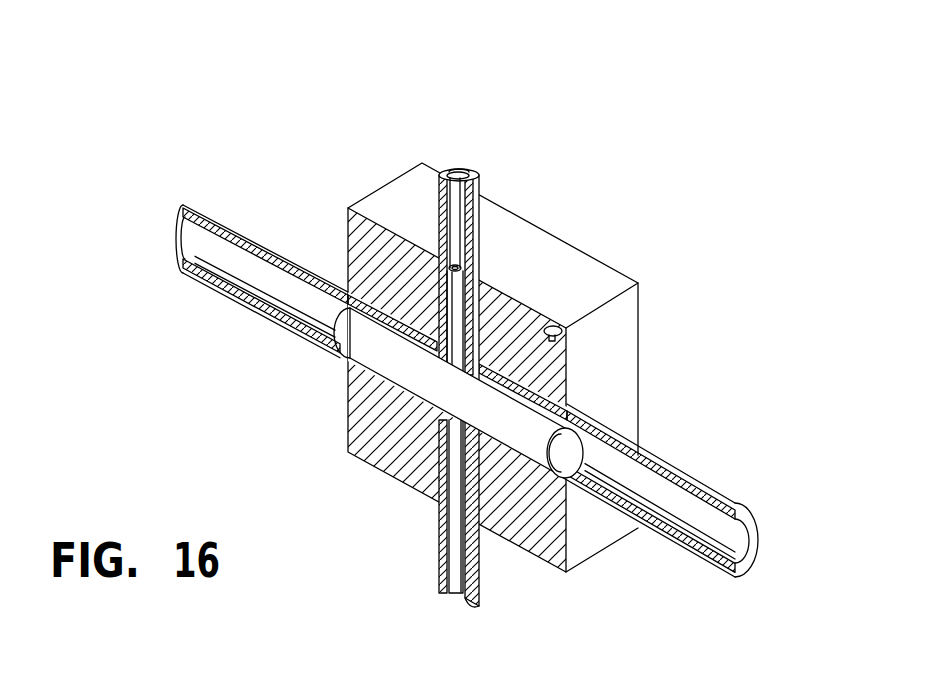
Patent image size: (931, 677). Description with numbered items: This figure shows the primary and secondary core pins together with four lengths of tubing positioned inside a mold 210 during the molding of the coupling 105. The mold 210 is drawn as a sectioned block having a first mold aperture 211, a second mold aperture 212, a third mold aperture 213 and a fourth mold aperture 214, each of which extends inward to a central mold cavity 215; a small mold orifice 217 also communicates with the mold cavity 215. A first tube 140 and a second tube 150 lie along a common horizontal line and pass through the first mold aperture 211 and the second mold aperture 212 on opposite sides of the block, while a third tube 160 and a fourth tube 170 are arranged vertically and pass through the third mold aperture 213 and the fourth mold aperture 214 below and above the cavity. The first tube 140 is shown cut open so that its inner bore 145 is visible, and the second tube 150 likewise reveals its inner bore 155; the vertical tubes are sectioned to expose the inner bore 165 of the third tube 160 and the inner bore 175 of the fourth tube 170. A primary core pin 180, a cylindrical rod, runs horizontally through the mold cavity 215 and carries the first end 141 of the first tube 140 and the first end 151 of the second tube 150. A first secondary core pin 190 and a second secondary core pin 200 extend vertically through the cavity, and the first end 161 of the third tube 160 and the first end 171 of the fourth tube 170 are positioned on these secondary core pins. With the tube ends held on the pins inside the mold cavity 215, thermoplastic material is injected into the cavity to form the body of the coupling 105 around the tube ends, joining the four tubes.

The coupling 105 is at (234, 64).
The first tube 140 is at (227, 288).
The first end of the first tube 141 is at (400, 295).
The inner bore of the first tube 145 is at (198, 240).
The second tube 150 is at (680, 530).
The first end of the second tube 151 is at (567, 363).
The inner bore of the second tube 155 is at (742, 533).
The third tube 160 is at (477, 567).
The first end of the third tube 161 is at (483, 503).
The inner bore of the third tube 165 is at (462, 595).
The fourth tube 170 is at (479, 174).
The first end of the fourth tube 171 is at (479, 312).
The inner bore of the fourth tube 175 is at (459, 173).
The primary core pin 180 is at (405, 345).
The first secondary core pin 190 is at (443, 512).
The second secondary core pin 200 is at (479, 308).
The mold 210 is at (542, 233).
The first mold aperture 211 is at (347, 378).
The second mold aperture 212 is at (423, 410).
The third mold aperture 213 is at (567, 400).
The fourth mold aperture 214 is at (405, 292).
The mold cavity 215 is at (383, 473).
The mold orifice 217 is at (565, 332).